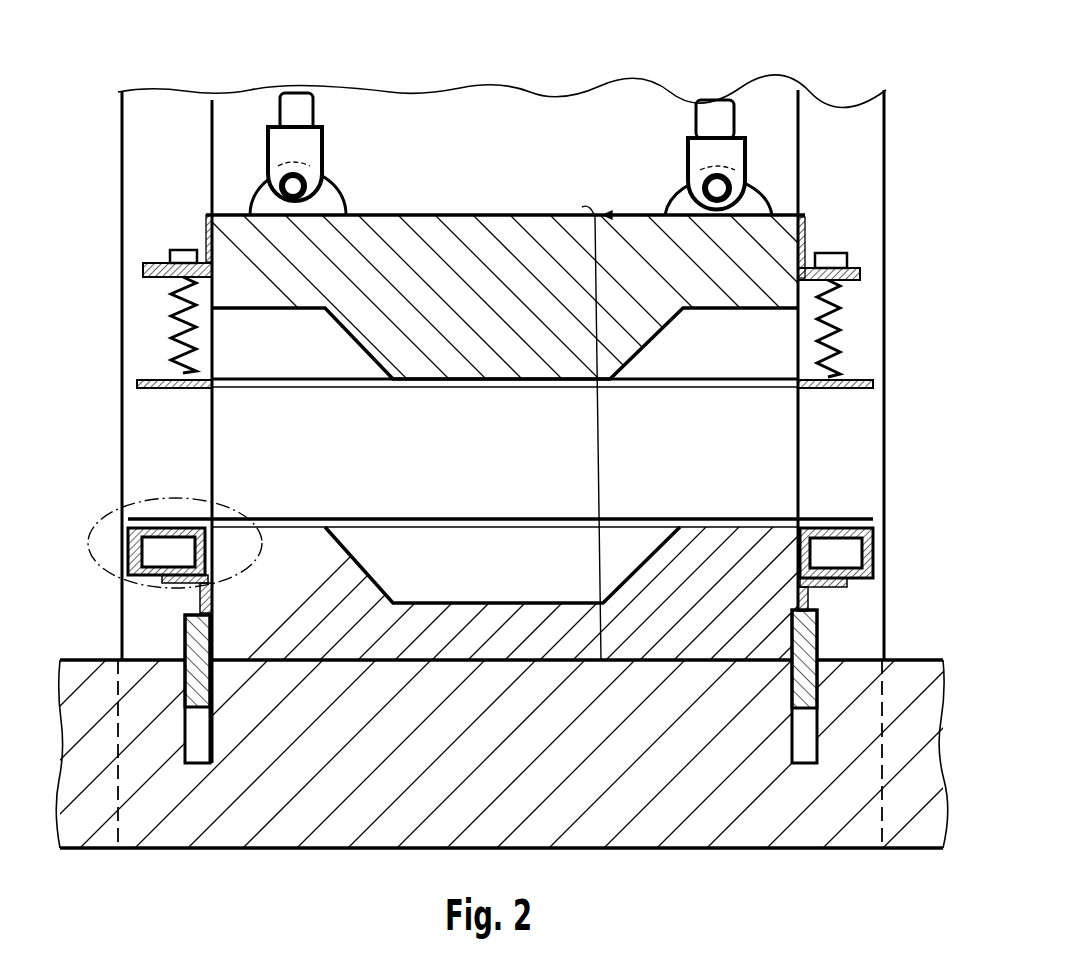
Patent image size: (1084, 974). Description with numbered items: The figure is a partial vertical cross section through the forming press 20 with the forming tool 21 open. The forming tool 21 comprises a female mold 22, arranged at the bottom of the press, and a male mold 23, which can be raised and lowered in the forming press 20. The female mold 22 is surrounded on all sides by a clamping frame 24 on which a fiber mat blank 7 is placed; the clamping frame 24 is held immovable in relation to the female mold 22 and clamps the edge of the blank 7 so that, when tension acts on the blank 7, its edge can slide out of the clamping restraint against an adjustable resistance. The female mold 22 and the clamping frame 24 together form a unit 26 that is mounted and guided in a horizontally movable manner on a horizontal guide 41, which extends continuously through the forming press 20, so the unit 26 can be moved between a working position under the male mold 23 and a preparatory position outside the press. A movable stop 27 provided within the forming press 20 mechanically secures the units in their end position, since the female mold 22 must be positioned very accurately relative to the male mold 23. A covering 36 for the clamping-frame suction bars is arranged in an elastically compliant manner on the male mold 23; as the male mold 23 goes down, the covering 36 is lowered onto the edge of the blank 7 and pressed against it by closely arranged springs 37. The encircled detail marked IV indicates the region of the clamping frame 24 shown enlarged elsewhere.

The forming press 20 is at (624, 90).
The forming tool 21 is at (616, 433).
The female mold 22 is at (480, 588).
The male mold 23 is at (463, 270).
The clamping frame 24 is at (150, 584).
The unit 26 is at (888, 522).
The stop 27 is at (197, 678).
The covering 36 is at (167, 389).
The springs 37 is at (194, 338).
The horizontal guide 41 is at (103, 656).
The fiber mat blank 7 is at (470, 518).
The detail IV is at (222, 502).